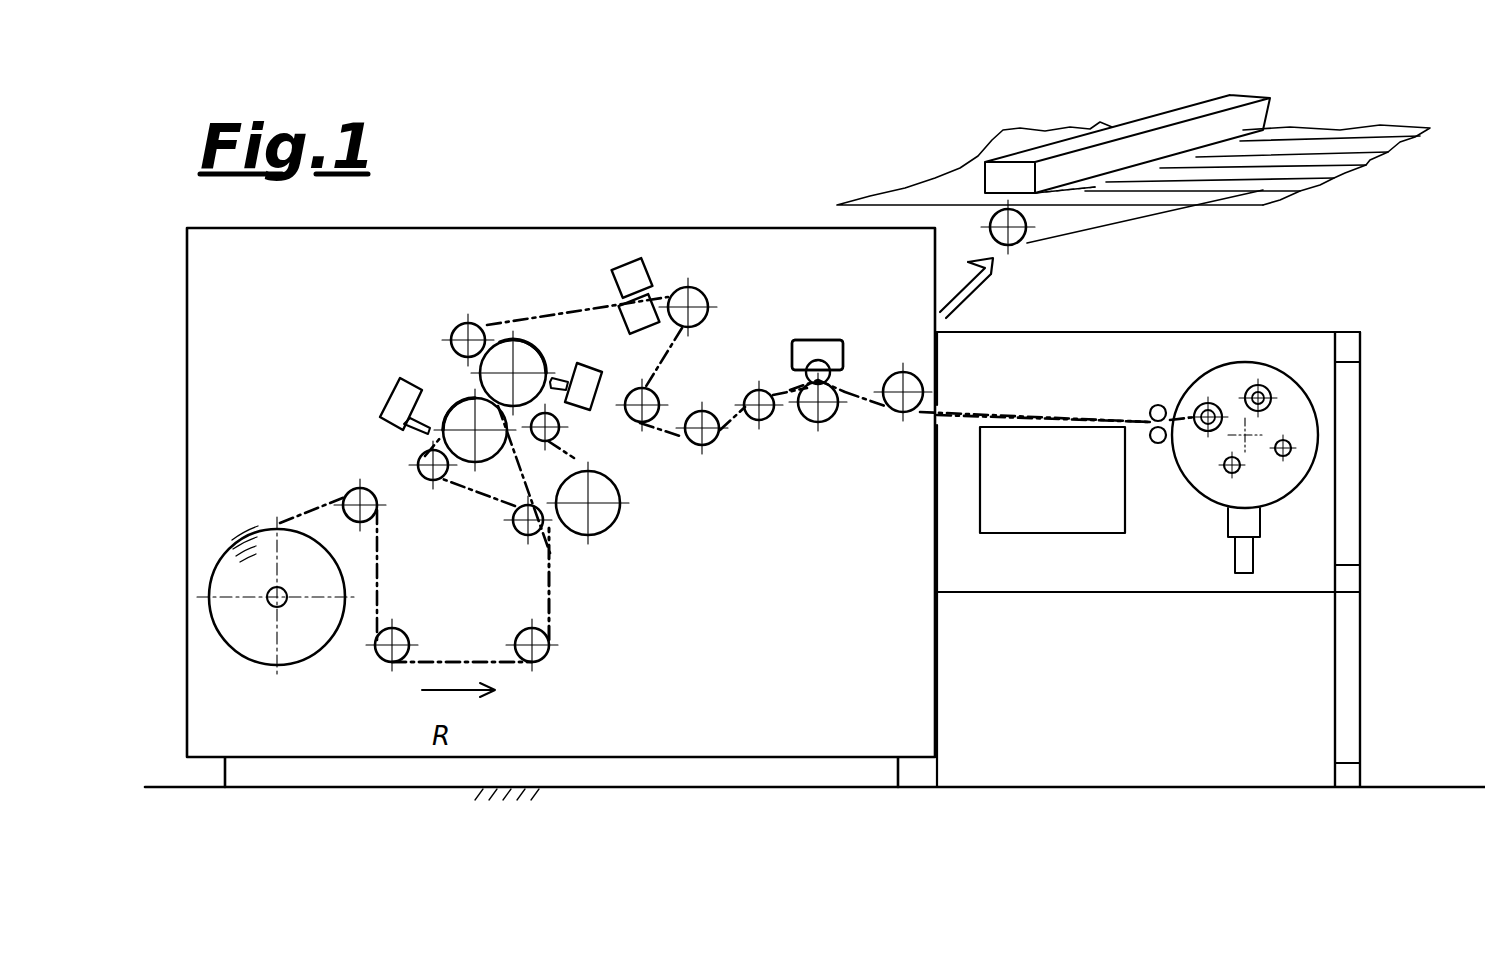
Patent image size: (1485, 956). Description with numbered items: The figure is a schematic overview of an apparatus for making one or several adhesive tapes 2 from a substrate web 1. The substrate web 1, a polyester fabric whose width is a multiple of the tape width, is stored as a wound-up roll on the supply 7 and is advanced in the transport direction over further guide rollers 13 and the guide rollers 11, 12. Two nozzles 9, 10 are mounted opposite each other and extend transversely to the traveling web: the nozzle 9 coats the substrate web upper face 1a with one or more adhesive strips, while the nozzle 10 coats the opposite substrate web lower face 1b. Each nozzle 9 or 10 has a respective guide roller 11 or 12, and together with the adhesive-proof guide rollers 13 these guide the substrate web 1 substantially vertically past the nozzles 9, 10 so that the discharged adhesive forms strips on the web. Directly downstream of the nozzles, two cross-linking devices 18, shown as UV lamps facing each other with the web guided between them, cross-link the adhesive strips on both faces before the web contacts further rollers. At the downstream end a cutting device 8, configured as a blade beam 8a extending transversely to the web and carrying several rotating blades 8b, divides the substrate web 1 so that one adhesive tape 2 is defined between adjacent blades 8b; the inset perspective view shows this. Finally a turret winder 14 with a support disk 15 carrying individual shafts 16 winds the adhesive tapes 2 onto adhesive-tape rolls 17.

The substrate web 1 is at (307, 503).
The substrate web upper face 1a is at (442, 660).
The substrate web lower face 1b is at (553, 598).
The adhesive tape 2 is at (962, 410).
The supply 7 is at (310, 638).
The cutting device 8 is at (828, 328).
The blade beam 8a is at (805, 345).
The rotating blades 8b is at (806, 387).
The nozzle 9 is at (384, 386).
The nozzle 10 is at (598, 404).
The guide roller 11 is at (462, 418).
The guide roller 12 is at (533, 362).
The guide rollers 13 is at (466, 332).
The turret winder 14 is at (1368, 292).
The support disk 15 is at (1298, 418).
The shafts 16 is at (1242, 472).
The adhesive-tape rolls 17 is at (1256, 390).
The cross-linking devices 18 is at (620, 318).